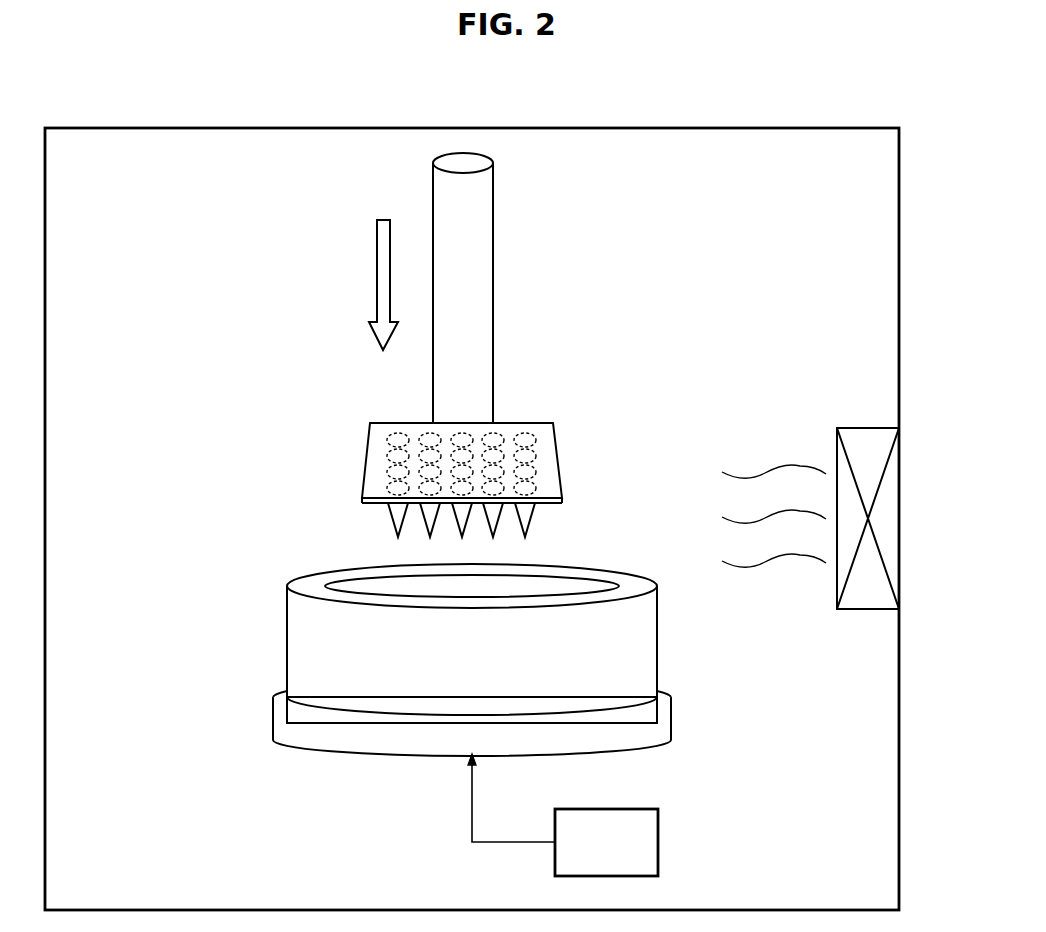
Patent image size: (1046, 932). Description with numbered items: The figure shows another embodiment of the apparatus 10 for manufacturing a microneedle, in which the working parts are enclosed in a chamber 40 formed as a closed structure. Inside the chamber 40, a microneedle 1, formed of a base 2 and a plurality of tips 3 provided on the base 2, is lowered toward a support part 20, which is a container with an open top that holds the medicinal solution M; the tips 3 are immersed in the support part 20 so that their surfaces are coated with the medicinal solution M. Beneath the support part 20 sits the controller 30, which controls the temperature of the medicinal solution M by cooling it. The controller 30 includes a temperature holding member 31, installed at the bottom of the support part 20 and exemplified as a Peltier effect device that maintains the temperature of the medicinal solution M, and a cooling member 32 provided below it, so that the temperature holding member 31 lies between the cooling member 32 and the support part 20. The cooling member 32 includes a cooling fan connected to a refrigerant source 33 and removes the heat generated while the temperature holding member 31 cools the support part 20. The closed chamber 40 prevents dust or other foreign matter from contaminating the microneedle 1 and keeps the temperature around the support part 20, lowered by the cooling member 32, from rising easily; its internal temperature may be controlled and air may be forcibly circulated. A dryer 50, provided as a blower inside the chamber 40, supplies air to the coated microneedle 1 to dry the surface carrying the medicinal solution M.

The microneedle 1 is at (449, 459).
The base 2 is at (542, 423).
The tips 3 is at (390, 513).
The apparatus for manufacturing a microneedle 10 is at (391, 653).
The support part 20 is at (300, 650).
The controller 30 is at (416, 735).
The temperature holding member 31 is at (296, 718).
The cooling member 32 is at (300, 739).
The refrigerant source 33 is at (608, 809).
The chamber 40 is at (472, 128).
The dryer 50 is at (885, 520).
The medicinal solution M is at (548, 590).